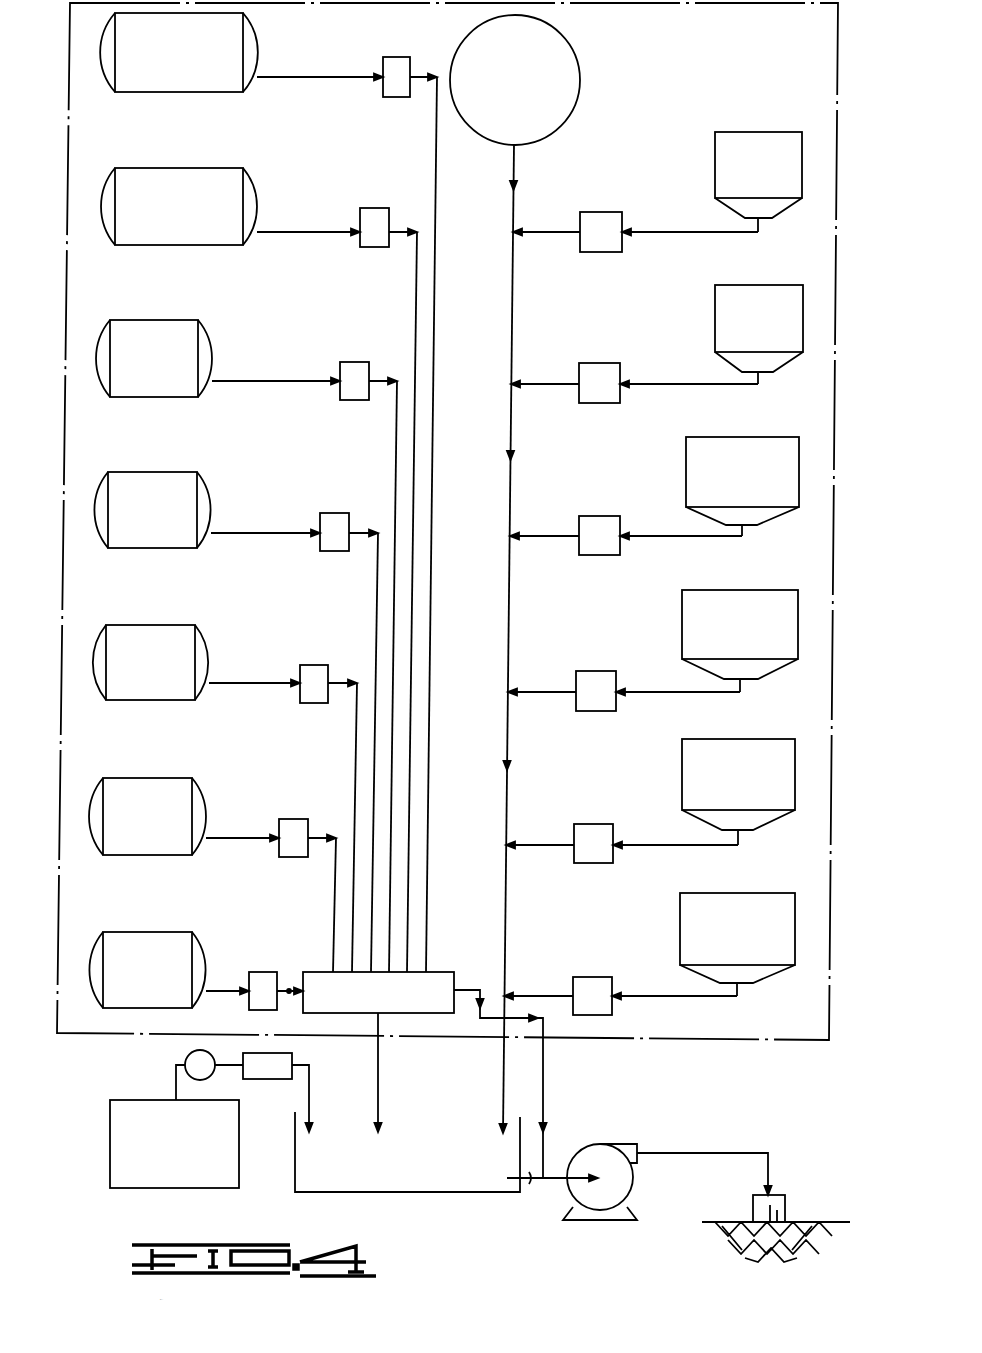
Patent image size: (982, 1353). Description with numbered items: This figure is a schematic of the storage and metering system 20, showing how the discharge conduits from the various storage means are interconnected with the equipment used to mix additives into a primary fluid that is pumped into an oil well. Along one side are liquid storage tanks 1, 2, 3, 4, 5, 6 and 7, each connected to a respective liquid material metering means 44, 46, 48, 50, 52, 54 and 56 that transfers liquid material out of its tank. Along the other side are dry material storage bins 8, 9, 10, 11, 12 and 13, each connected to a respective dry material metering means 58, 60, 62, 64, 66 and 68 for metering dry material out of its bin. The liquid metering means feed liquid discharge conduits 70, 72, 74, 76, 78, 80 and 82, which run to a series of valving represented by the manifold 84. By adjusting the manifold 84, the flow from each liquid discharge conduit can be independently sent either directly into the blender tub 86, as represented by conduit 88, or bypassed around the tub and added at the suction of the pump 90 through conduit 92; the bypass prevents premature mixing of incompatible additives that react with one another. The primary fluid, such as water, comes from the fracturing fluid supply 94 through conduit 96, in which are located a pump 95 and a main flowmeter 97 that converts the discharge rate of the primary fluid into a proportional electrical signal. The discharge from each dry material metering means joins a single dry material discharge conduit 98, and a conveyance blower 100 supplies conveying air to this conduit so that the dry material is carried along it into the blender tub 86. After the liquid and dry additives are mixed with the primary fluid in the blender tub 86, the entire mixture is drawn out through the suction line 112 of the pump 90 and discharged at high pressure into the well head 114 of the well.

The liquid storage tank 1 is at (184, 84).
The liquid storage tank 2 is at (184, 240).
The liquid storage tank 3 is at (162, 393).
The liquid storage tank 4 is at (160, 544).
The liquid storage tank 5 is at (158, 696).
The liquid storage tank 6 is at (155, 851).
The liquid storage tank 7 is at (155, 1004).
The dry material storage bin 8 is at (746, 962).
The dry material storage bin 9 is at (747, 807).
The dry material storage bin 10 is at (750, 656).
The dry material storage bin 11 is at (753, 504).
The dry material storage bin 12 is at (768, 195).
The dry material storage bin 13 is at (768, 349).
The storage and metering system 20 is at (843, 145).
The liquid material metering means 44 is at (406, 88).
The liquid material metering means 46 is at (384, 238).
The liquid material metering means 48 is at (364, 392).
The liquid material metering means 50 is at (344, 543).
The liquid material metering means 52 is at (324, 694).
The liquid material metering means 54 is at (303, 848).
The liquid material metering means 56 is at (272, 1001).
The dry material metering means 58 is at (602, 1007).
The dry material metering means 60 is at (603, 855).
The dry material metering means 62 is at (606, 702).
The dry material metering means 64 is at (609, 546).
The dry material metering means 66 is at (610, 243).
The dry material metering means 68 is at (609, 394).
The liquid discharge conduit 70 is at (435, 137).
The liquid discharge conduit 72 is at (415, 302).
The liquid discharge conduit 74 is at (395, 452).
The liquid discharge conduit 76 is at (376, 601).
The liquid discharge conduit 78 is at (355, 755).
The liquid discharge conduit 80 is at (334, 886).
The liquid discharge conduit 82 is at (288, 986).
The manifold 84 is at (440, 974).
The blender tub 86 is at (294, 1160).
The conduit 88 is at (381, 1086).
The pump 90 is at (599, 1144).
The conduit 92 is at (546, 1088).
The fracturing fluid supply 94 is at (109, 1159).
The pump 95 is at (188, 1056).
The conduit 96 is at (310, 1096).
The main flowmeter 97 is at (252, 1080).
The dry material discharge conduit 98 is at (510, 620).
The conveyance blower 100 is at (498, 122).
The suction line 112 is at (530, 1188).
The well head 114 is at (752, 1206).